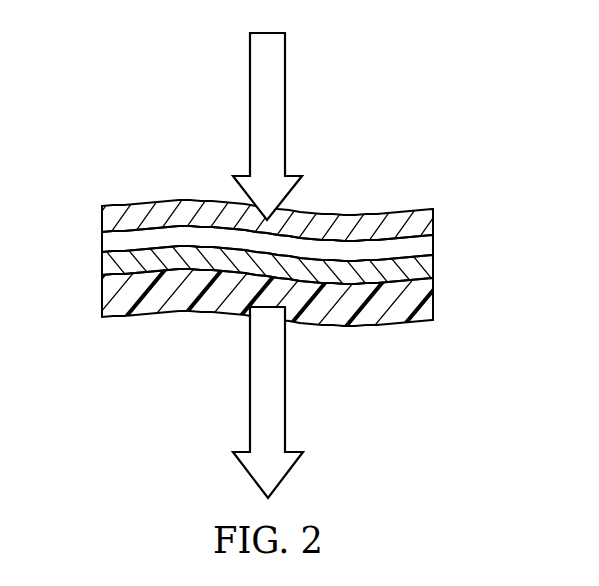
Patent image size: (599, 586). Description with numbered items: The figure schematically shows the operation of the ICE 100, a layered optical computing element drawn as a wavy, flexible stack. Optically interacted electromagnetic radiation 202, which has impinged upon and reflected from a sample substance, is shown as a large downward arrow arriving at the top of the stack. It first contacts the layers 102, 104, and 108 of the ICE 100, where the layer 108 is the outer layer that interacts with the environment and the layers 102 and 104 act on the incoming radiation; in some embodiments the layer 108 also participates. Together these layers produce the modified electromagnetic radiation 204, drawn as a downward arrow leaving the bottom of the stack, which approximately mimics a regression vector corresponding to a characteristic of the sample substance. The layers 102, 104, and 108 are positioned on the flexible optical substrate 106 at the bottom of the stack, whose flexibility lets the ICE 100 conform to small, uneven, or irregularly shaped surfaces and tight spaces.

The integrated computing element (ICE) 100 is at (256, 225).
The layer 102 is at (102, 267).
The layer 104 is at (425, 246).
The flexible optical substrate 106 is at (425, 298).
The layer 108 is at (102, 222).
The optically interacted electromagnetic radiation 202 is at (250, 103).
The modified electromagnetic radiation 204 is at (250, 378).